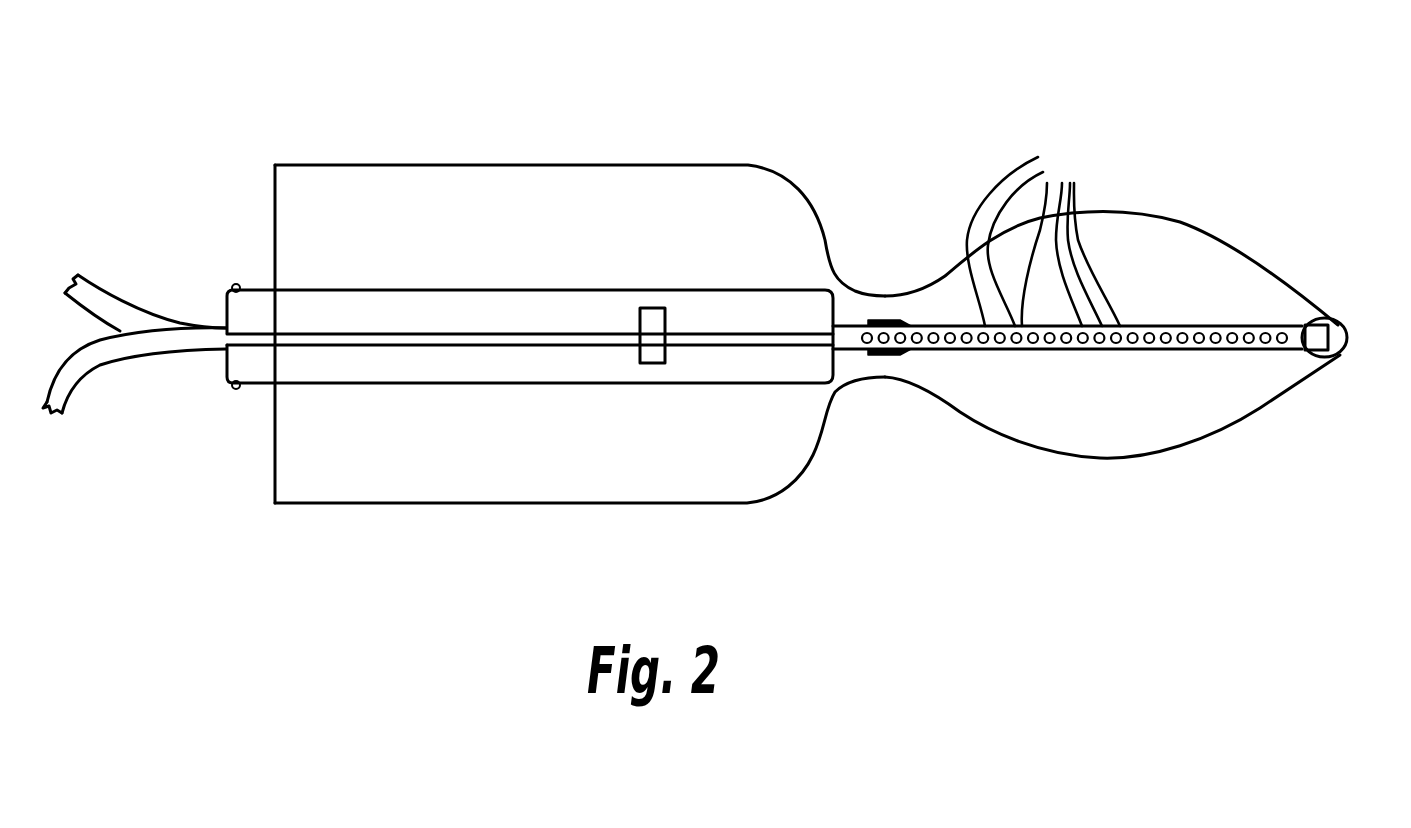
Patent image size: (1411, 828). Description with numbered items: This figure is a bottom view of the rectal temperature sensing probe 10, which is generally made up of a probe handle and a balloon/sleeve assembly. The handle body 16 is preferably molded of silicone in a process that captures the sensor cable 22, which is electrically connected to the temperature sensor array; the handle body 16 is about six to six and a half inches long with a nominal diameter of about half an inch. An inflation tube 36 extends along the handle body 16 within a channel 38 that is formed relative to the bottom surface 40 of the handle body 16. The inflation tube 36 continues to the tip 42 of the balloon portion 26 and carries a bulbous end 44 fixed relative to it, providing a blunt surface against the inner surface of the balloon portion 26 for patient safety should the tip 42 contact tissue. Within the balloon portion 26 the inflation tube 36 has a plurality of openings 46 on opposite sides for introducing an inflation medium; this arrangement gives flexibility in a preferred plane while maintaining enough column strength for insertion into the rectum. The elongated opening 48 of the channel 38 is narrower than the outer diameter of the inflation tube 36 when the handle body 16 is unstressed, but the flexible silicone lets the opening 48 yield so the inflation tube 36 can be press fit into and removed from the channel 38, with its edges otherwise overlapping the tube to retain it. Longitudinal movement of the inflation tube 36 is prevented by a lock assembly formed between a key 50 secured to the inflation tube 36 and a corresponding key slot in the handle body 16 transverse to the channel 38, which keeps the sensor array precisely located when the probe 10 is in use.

The rectal temperature sensing probe 10 is at (554, 143).
The handle body 16 is at (556, 290).
The sensor cable 22 is at (100, 312).
The balloon portion 26 is at (1093, 459).
The inflation tube 36 is at (64, 384).
The channel 38 is at (458, 336).
The bottom surface 40 is at (402, 327).
The tip 42 is at (1335, 318).
The bulbous end 44 is at (1335, 350).
The openings 46 is at (1043, 238).
The elongated opening 48 is at (407, 346).
The key 50 is at (647, 327).